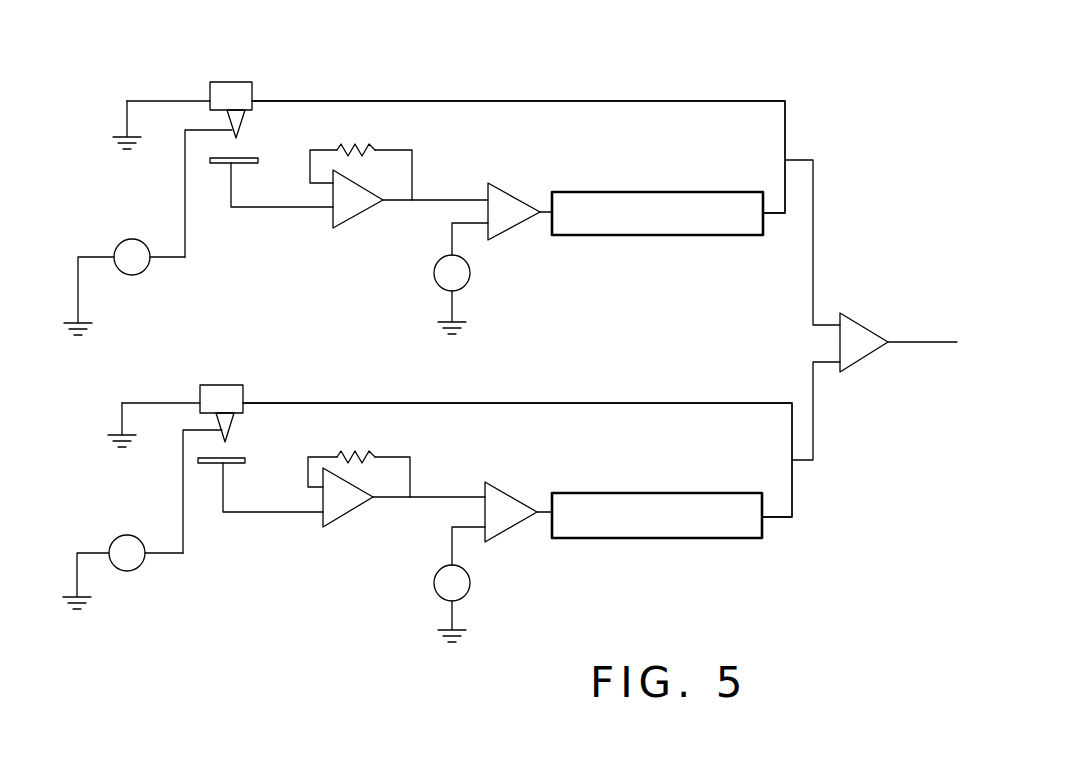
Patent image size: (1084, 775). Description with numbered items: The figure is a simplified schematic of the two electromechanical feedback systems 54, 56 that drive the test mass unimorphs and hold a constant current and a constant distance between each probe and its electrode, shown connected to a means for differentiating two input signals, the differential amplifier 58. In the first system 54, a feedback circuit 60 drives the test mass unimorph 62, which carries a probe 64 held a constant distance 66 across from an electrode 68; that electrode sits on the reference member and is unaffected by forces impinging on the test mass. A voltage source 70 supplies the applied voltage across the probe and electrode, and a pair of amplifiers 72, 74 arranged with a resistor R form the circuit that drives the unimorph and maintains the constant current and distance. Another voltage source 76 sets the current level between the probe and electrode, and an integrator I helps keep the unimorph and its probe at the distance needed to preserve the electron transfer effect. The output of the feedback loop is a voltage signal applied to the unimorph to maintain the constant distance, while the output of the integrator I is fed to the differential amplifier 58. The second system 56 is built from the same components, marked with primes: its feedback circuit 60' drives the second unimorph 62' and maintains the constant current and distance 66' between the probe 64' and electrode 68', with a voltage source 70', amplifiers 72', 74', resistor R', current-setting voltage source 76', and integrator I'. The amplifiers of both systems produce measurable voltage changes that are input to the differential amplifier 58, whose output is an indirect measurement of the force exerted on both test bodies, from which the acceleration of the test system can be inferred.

The first electromechanical feedback system 54 is at (545, 84).
The second electromechanical feedback system 56 is at (625, 391).
The differential amplifier 58 is at (866, 323).
The feedback circuit 60 is at (518, 140).
The feedback circuit 60' is at (517, 445).
The test mass unimorph 62 is at (203, 94).
The test mass unimorph 62' is at (194, 399).
The probe 64 is at (249, 177).
The probe 64' is at (251, 477).
The constant distance 66 is at (271, 165).
The constant distance 66' is at (260, 469).
The electrode 68 is at (215, 209).
The electrode 68' is at (231, 518).
The voltage source 70 is at (124, 287).
The voltage source 70' is at (123, 579).
The amplifier 72 is at (520, 191).
The amplifier 72' is at (518, 494).
The amplifier 74 is at (389, 211).
The amplifier 74' is at (396, 522).
The voltage source 76 is at (478, 278).
The voltage source 76' is at (480, 584).
The resistor R is at (360, 133).
The resistor R' is at (360, 437).
The integrator I is at (657, 195).
The integrator I' is at (657, 493).